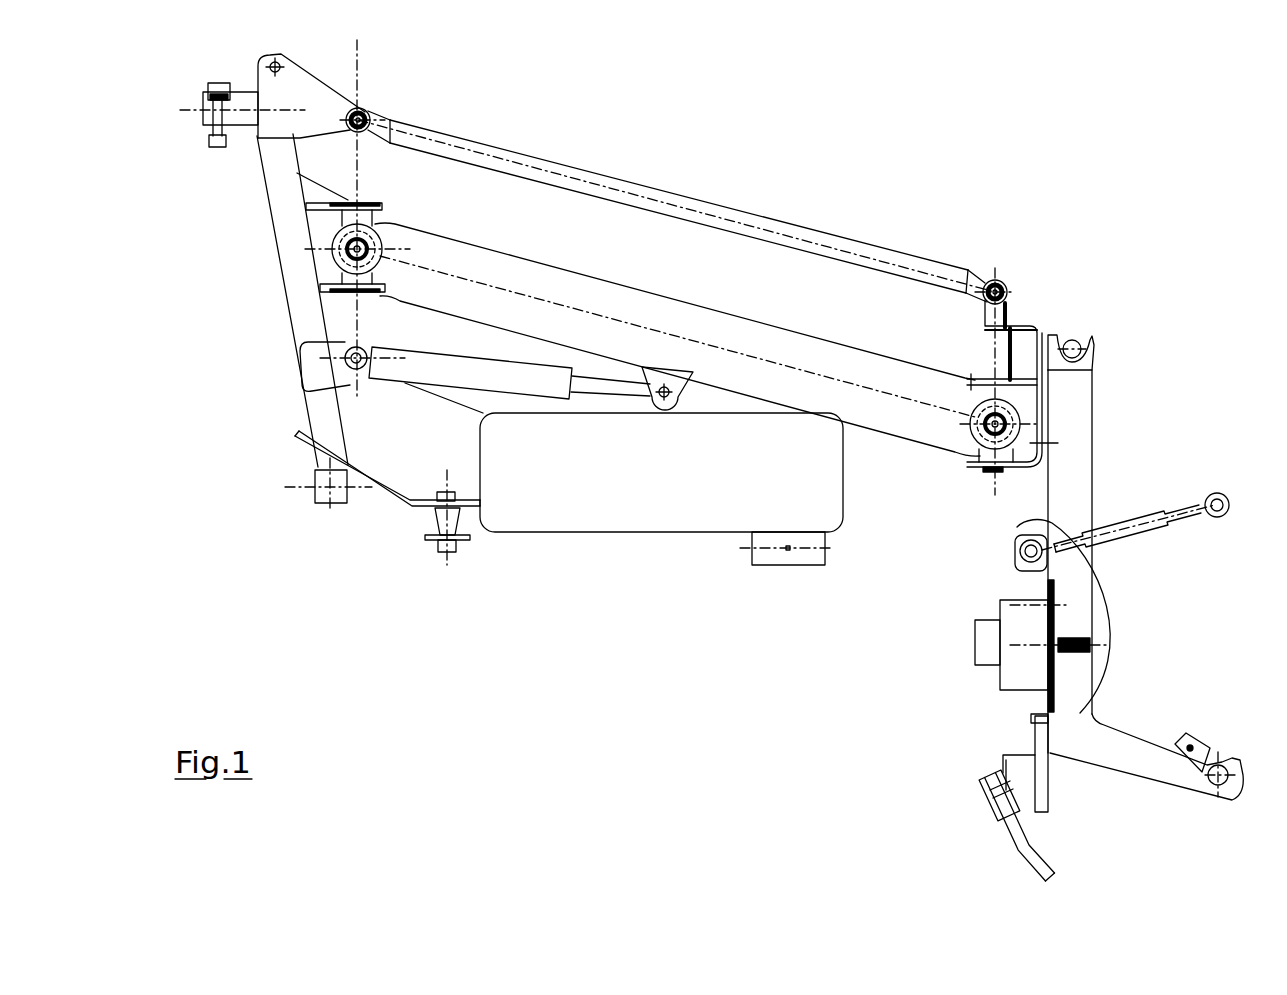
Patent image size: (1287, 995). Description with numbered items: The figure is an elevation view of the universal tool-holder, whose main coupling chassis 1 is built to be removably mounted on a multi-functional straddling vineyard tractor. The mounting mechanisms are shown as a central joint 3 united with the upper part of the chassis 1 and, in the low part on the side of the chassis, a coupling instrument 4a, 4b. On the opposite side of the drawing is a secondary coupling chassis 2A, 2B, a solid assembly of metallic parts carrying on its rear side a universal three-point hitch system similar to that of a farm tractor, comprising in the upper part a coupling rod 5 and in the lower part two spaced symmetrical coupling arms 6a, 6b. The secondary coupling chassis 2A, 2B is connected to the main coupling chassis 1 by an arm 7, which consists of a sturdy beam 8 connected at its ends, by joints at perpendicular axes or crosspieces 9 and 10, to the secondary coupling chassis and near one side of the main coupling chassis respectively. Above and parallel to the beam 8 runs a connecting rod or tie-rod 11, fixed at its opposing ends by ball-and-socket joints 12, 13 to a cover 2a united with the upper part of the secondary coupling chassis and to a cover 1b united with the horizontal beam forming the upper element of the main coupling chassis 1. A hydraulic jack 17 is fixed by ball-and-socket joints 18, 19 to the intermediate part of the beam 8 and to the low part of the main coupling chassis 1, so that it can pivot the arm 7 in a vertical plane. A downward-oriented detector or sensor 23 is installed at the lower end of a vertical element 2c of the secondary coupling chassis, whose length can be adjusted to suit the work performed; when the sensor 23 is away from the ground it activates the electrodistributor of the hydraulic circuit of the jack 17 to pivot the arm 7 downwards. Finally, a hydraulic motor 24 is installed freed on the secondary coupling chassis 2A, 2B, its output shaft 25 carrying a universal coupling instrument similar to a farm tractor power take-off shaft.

The main coupling chassis 1 is at (222, 321).
The cover 1b is at (323, 95).
The cover 2a is at (1012, 315).
The secondary coupling chassis 2A is at (1086, 612).
The secondary coupling chassis 2B is at (1122, 457).
The vertical element 2c is at (1035, 734).
The central joint 3 is at (240, 98).
The coupling instrument 4a is at (384, 517).
The coupling instrument 4b is at (447, 518).
The coupling rod 5 is at (1140, 525).
The coupling arm 6a is at (1146, 802).
The coupling arm 6b is at (1177, 783).
The arm 7 is at (610, 150).
The beam 8 is at (643, 298).
The crosspiece 9 is at (1000, 424).
The crosspiece 10 is at (355, 249).
The tie-rod 11 is at (428, 135).
The ball-and-socket joint 12 is at (1000, 285).
The ball-and-socket joint 13 is at (362, 117).
The jack 17 is at (412, 378).
The ball-and-socket joint 18 is at (667, 397).
The ball-and-socket joint 19 is at (350, 352).
The sensor 23 is at (1008, 840).
The hydraulic motor 24 is at (1015, 632).
The output shaft 25 is at (1095, 638).